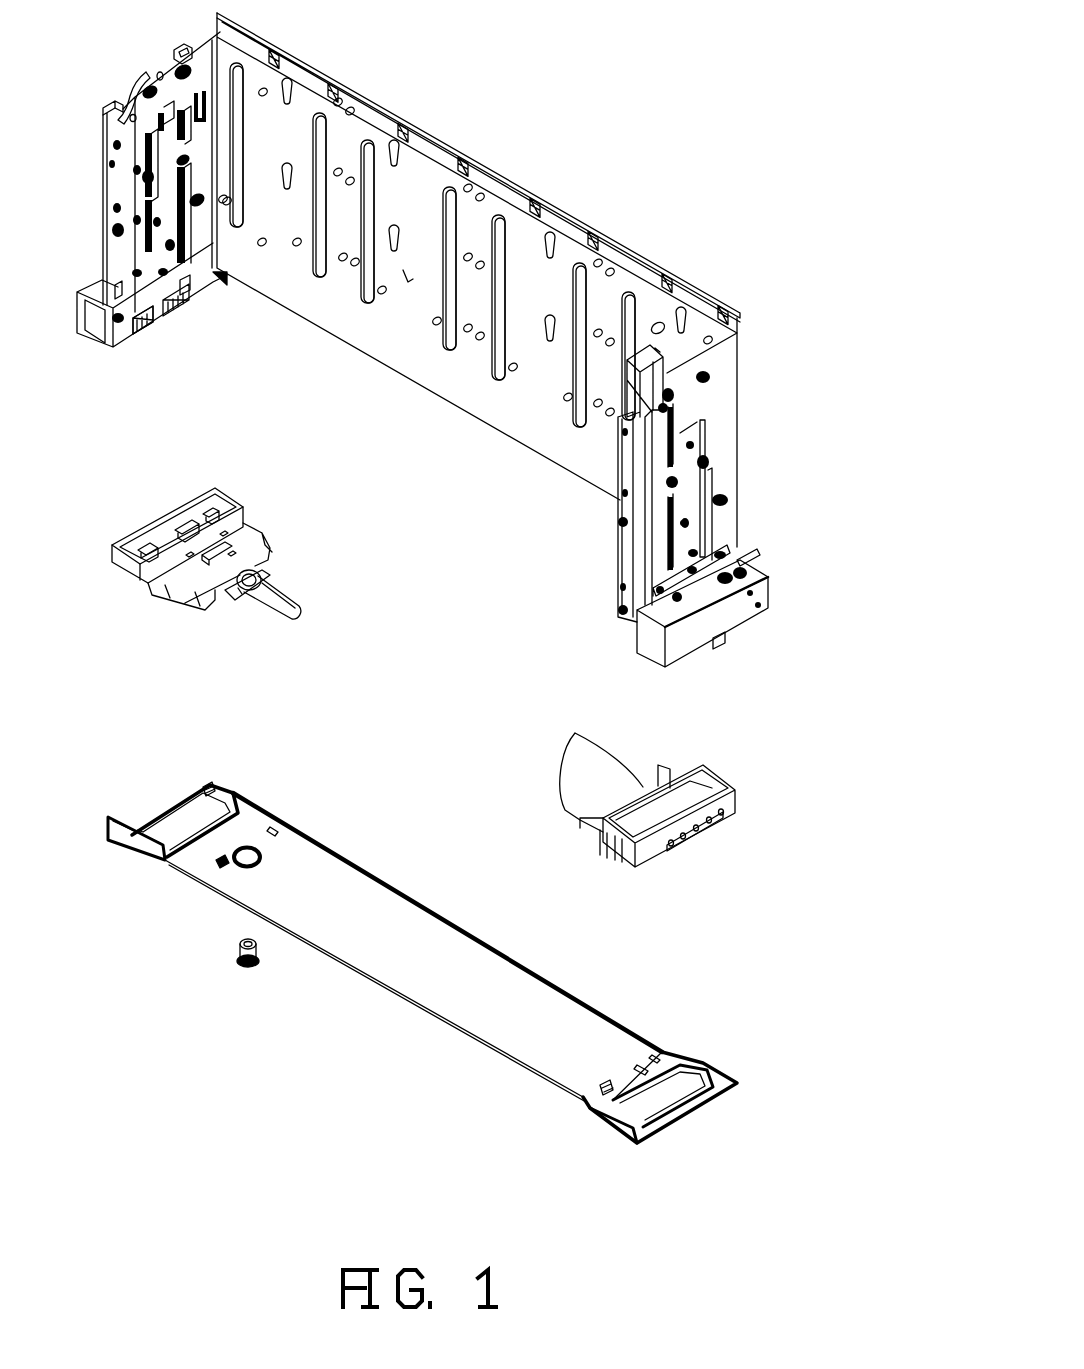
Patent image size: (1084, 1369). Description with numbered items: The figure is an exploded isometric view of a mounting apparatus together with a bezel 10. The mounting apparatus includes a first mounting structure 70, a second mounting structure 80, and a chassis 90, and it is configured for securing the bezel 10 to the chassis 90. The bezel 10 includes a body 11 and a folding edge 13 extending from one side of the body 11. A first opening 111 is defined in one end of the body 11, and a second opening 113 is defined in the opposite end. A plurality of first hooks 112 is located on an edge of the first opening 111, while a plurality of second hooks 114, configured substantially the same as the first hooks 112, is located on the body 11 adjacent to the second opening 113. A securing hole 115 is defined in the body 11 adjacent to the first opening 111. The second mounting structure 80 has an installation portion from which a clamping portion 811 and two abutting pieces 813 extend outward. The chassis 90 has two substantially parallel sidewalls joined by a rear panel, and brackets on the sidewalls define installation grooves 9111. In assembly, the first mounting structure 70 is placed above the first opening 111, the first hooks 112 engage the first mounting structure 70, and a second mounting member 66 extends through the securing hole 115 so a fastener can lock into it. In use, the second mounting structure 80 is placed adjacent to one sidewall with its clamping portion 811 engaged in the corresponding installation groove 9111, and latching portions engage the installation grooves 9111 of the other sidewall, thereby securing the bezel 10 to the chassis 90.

The chassis 90 is at (539, 168).
The installation groove 9111 is at (146, 330).
The first mounting structure 70 is at (147, 534).
The second mounting structure 80 is at (685, 806).
The clamping portion 811 is at (720, 820).
The abutting piece 813 is at (575, 733).
The bezel 10 is at (405, 954).
The body 11 is at (343, 895).
The first opening 111 is at (178, 828).
The first hook 112 is at (208, 782).
The second opening 113 is at (663, 1088).
The second hook 114 is at (606, 1080).
The securing hole 115 is at (248, 847).
The folding edge 13 is at (130, 845).
The second mounting member 66 is at (233, 960).